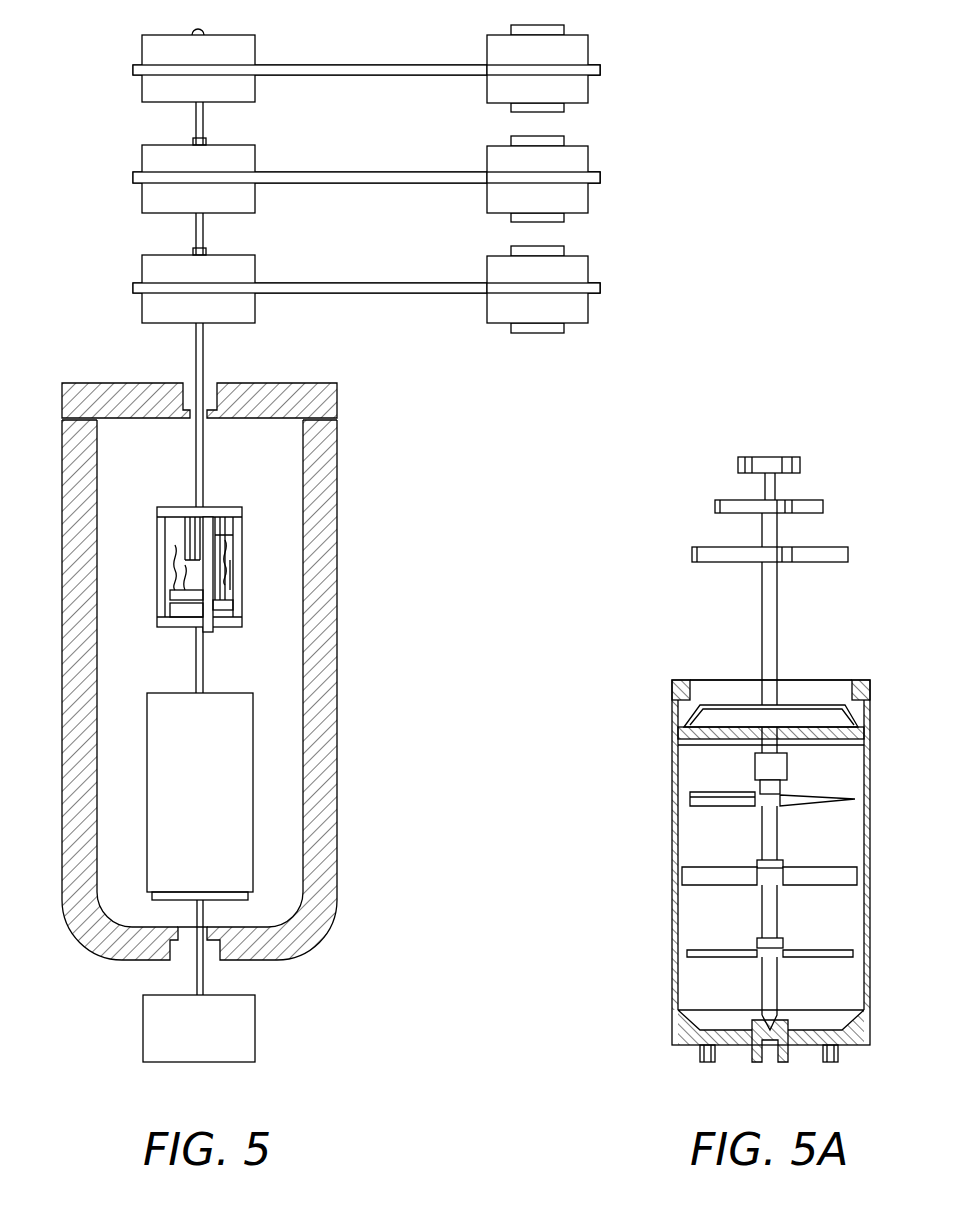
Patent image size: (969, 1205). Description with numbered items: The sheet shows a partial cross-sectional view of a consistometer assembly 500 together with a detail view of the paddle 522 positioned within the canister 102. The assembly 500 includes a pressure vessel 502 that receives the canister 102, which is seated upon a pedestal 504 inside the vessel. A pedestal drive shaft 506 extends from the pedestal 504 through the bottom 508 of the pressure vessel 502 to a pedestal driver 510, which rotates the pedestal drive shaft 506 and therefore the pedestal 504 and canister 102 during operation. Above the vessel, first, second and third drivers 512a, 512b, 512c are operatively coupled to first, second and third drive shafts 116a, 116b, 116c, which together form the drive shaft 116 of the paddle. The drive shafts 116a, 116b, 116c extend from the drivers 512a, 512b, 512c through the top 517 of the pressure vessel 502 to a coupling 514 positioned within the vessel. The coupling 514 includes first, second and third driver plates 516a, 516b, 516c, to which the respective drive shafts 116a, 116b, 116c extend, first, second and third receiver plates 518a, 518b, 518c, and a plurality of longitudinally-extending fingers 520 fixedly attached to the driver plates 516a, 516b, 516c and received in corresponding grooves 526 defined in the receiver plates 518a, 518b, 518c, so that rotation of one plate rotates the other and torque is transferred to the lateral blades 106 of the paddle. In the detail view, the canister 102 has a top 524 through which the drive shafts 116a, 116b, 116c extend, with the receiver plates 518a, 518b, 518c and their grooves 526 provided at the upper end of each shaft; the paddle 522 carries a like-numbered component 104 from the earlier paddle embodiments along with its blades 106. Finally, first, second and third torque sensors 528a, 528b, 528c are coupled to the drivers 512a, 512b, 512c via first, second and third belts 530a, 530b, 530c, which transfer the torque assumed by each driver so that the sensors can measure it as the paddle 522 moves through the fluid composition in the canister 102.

In FIG. 5, the canister 102 is at (200, 792).
In FIG. 5A, the canister 102 is at (760, 849).
In FIG. 5A, the hub 104 is at (755, 768).
In FIG. 5A, the lateral blades 106 is at (722, 806).
In FIG. 5, the drive shaft 116 is at (190, 466).
In FIG. 5A, the drive shaft 116 is at (757, 634).
In FIG. 5, the first drive shaft 116a is at (196, 354).
In FIG. 5A, the first drive shaft 116a is at (762, 585).
In FIG. 5, the second drive shaft 116b is at (196, 235).
In FIG. 5A, the second drive shaft 116b is at (762, 534).
In FIG. 5, the third drive shaft 116c is at (196, 124).
In FIG. 5A, the third drive shaft 116c is at (765, 484).
In FIG. 5, the consistometer assembly 500 is at (428, 421).
In FIG. 5, the pressure vessel 502 is at (80, 592).
In FIG. 5, the pedestal 504 is at (153, 897).
In FIG. 5, the pedestal drive shaft 506 is at (196, 916).
In FIG. 5, the bottom of the pressure vessel 508 is at (258, 916).
In FIG. 5, the pedestal driver 510 is at (237, 1028).
In FIG. 5, the first driver 512a is at (148, 313).
In FIG. 5, the second driver 512b is at (148, 204).
In FIG. 5, the third driver 512c is at (148, 96).
In FIG. 5, the coupling 514 is at (158, 553).
In FIG. 5, the first driver plate 516a is at (208, 507).
In FIG. 5, the second driver plate 516b is at (222, 530).
In FIG. 5, the third driver plate 516c is at (178, 552).
In FIG. 5, the top of the pressure vessel 517 is at (288, 392).
In FIG. 5, the first receiver plate 518a is at (225, 624).
In FIG. 5A, the first receiver plate 518a is at (848, 555).
In FIG. 5, the second receiver plate 518b is at (180, 610).
In FIG. 5A, the second receiver plate 518b is at (823, 507).
In FIG. 5, the third receiver plate 518c is at (180, 594).
In FIG. 5A, the third receiver plate 518c is at (800, 466).
In FIG. 5, the fingers 520 is at (180, 575).
In FIG. 5A, the paddle 522 is at (842, 764).
In FIG. 5A, the top of the canister 524 is at (822, 686).
In FIG. 5A, the grooves 526 is at (762, 460).
In FIG. 5, the first torque sensor 528a is at (582, 269).
In FIG. 5, the second torque sensor 528b is at (582, 159).
In FIG. 5, the third torque sensor 528c is at (582, 48).
In FIG. 5, the first belt 530a is at (348, 283).
In FIG. 5, the second belt 530b is at (348, 172).
In FIG. 5, the third belt 530c is at (362, 65).